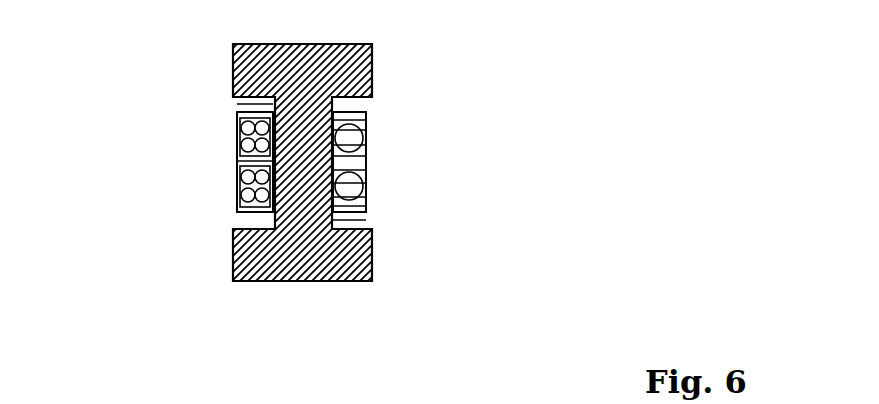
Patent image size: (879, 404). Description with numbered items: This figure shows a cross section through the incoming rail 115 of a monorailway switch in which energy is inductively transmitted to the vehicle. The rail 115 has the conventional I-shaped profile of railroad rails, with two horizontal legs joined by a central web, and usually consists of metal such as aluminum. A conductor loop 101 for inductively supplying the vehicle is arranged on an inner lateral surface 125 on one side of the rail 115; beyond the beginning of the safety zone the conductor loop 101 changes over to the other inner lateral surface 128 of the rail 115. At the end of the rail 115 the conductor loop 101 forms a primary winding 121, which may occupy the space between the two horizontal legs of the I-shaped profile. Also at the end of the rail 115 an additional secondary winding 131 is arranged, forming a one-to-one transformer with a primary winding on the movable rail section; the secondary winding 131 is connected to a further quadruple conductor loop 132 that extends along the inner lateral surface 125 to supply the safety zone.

The incoming rail 115 is at (335, 75).
The inner lateral surface 125 is at (270, 103).
The secondary winding 131 is at (250, 167).
The conductor loop 132 is at (244, 137).
The conductor loop 101 is at (350, 143).
The primary winding 121 is at (354, 166).
The inner lateral surface 128 is at (342, 219).